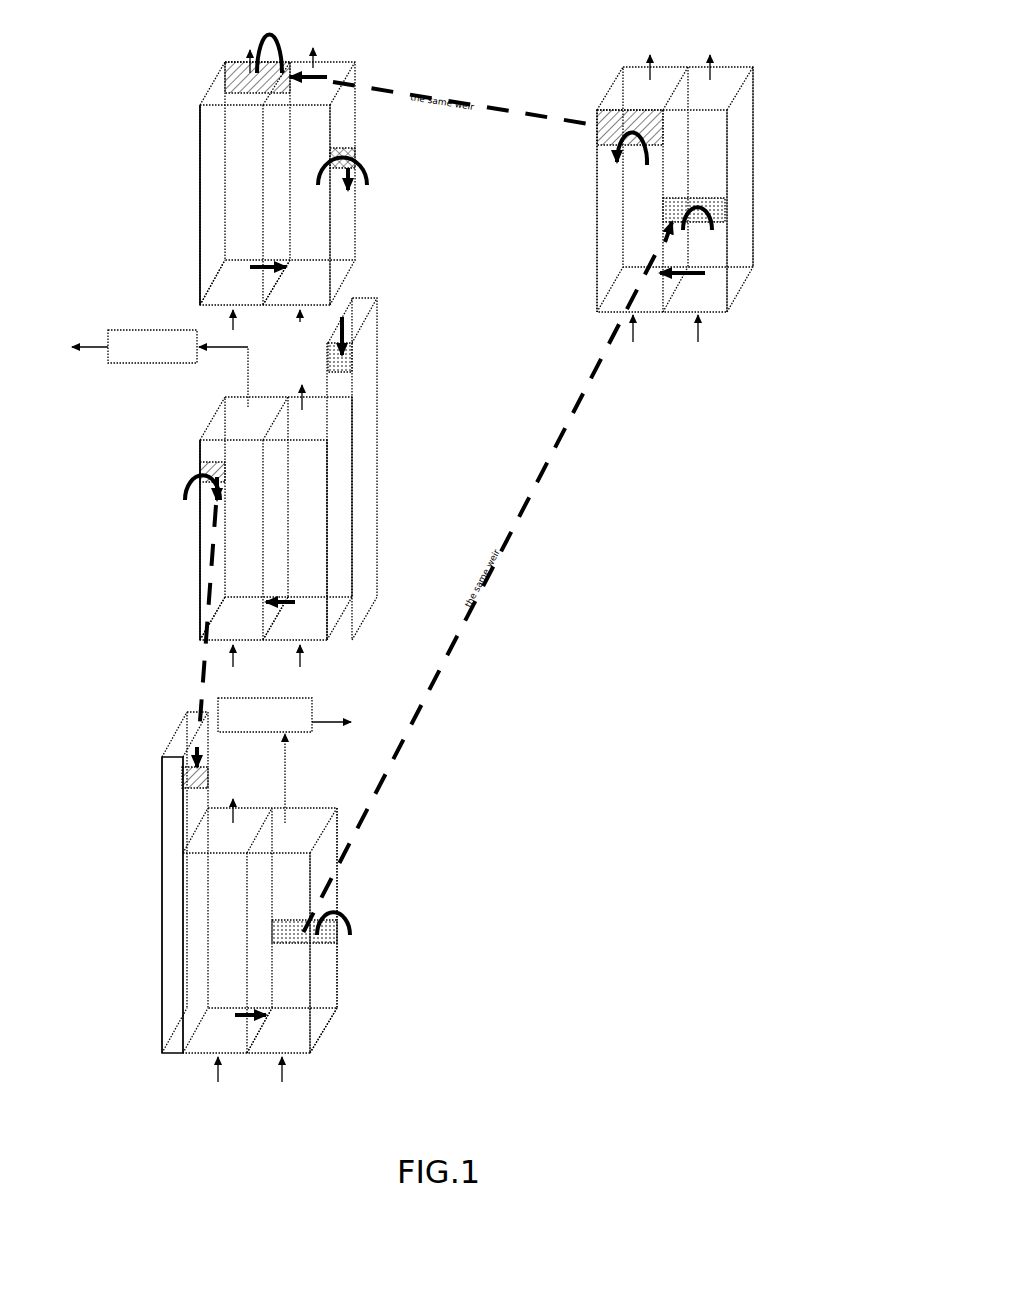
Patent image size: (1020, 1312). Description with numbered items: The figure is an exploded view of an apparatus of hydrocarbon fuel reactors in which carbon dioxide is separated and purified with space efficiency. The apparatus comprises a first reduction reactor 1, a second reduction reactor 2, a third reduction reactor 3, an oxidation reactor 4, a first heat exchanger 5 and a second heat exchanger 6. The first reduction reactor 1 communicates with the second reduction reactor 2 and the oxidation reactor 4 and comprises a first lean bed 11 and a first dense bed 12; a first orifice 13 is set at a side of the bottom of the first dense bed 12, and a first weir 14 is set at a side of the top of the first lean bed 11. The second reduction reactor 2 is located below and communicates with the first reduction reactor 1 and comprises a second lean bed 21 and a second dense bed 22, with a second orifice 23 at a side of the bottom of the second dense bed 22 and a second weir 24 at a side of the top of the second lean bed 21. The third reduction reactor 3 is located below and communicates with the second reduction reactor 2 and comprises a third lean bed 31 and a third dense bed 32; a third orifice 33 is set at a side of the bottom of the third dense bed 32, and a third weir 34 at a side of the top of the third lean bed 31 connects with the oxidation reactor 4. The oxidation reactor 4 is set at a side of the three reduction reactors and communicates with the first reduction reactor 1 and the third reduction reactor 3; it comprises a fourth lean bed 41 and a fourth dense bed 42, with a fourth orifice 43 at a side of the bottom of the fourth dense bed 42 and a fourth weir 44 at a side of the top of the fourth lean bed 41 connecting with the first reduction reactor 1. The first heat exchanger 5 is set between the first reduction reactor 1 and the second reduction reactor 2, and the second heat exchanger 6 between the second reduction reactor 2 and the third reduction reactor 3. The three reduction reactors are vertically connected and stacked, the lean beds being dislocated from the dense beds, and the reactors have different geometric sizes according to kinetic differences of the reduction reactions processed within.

The first reduction reactor 1 is at (175, 113).
The first lean bed 11 is at (348, 222).
The first dense bed 12 is at (215, 190).
The first orifice 13 is at (282, 252).
The first weir 14 is at (355, 153).
The second reduction reactor 2 is at (392, 432).
The second lean bed 21 is at (232, 548).
The second dense bed 22 is at (317, 508).
The second orifice 23 is at (282, 580).
The second weir 24 is at (200, 465).
The third reduction reactor 3 is at (142, 848).
The third lean bed 31 is at (293, 962).
The third dense bed 32 is at (213, 963).
The third orifice 33 is at (270, 1003).
The third weir 34 is at (317, 897).
The oxidation reactor 4 is at (775, 118).
The fourth lean bed 41 is at (617, 199).
The fourth dense bed 42 is at (708, 167).
The fourth orifice 43 is at (682, 260).
The fourth weir 44 is at (595, 117).
The first heat exchanger 5 is at (152, 330).
The second heat exchanger 6 is at (303, 698).